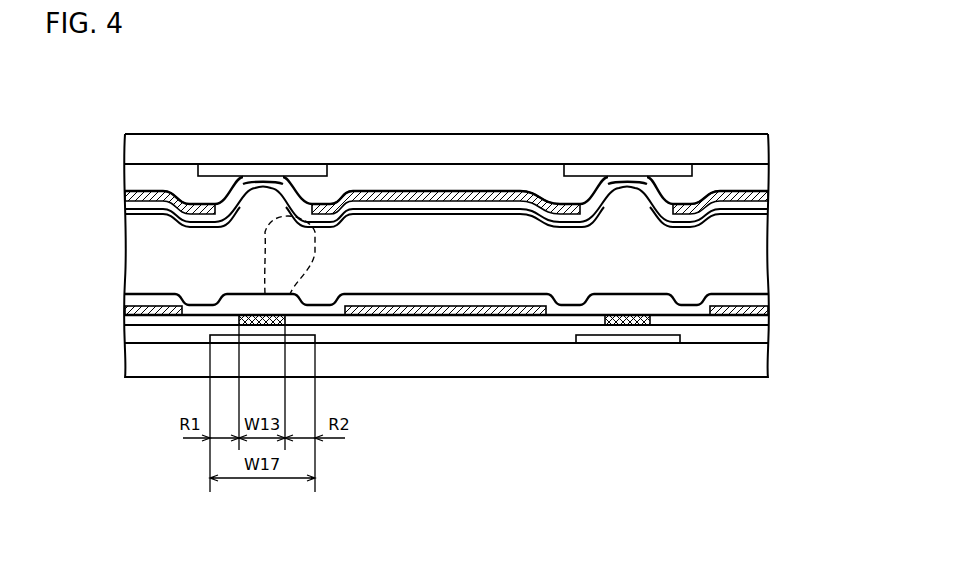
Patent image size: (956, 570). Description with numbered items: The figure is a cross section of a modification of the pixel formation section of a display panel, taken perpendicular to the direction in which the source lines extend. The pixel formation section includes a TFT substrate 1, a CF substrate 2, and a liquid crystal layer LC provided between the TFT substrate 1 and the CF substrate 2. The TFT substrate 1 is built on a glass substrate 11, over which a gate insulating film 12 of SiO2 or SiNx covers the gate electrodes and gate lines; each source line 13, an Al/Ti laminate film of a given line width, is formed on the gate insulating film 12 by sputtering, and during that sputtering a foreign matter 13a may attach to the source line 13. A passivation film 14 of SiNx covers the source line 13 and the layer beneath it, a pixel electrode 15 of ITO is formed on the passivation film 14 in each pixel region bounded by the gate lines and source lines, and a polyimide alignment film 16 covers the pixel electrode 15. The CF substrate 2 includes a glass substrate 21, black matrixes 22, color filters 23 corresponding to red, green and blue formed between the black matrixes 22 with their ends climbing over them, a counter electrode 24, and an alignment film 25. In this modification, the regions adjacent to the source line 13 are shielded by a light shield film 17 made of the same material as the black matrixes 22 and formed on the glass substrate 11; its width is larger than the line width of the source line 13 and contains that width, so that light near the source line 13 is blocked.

The TFT substrate 1 is at (111, 295).
The CF substrate 2 is at (111, 135).
The liquid crystal layer LC is at (124, 257).
The glass substrate 11 is at (757, 363).
The gate insulating film 12 is at (758, 338).
The source line 13 is at (257, 318).
The foreign matter 13a is at (315, 255).
The passivation film 14 is at (758, 320).
The pixel electrode 15 is at (141, 316).
The alignment film 16 is at (766, 294).
The light shield film 17 is at (232, 336).
The glass substrate 21 is at (770, 148).
The black matrix 22 is at (263, 174).
The color filter 23 is at (770, 176).
The counter electrode 24 is at (146, 195).
The alignment film 25 is at (760, 207).